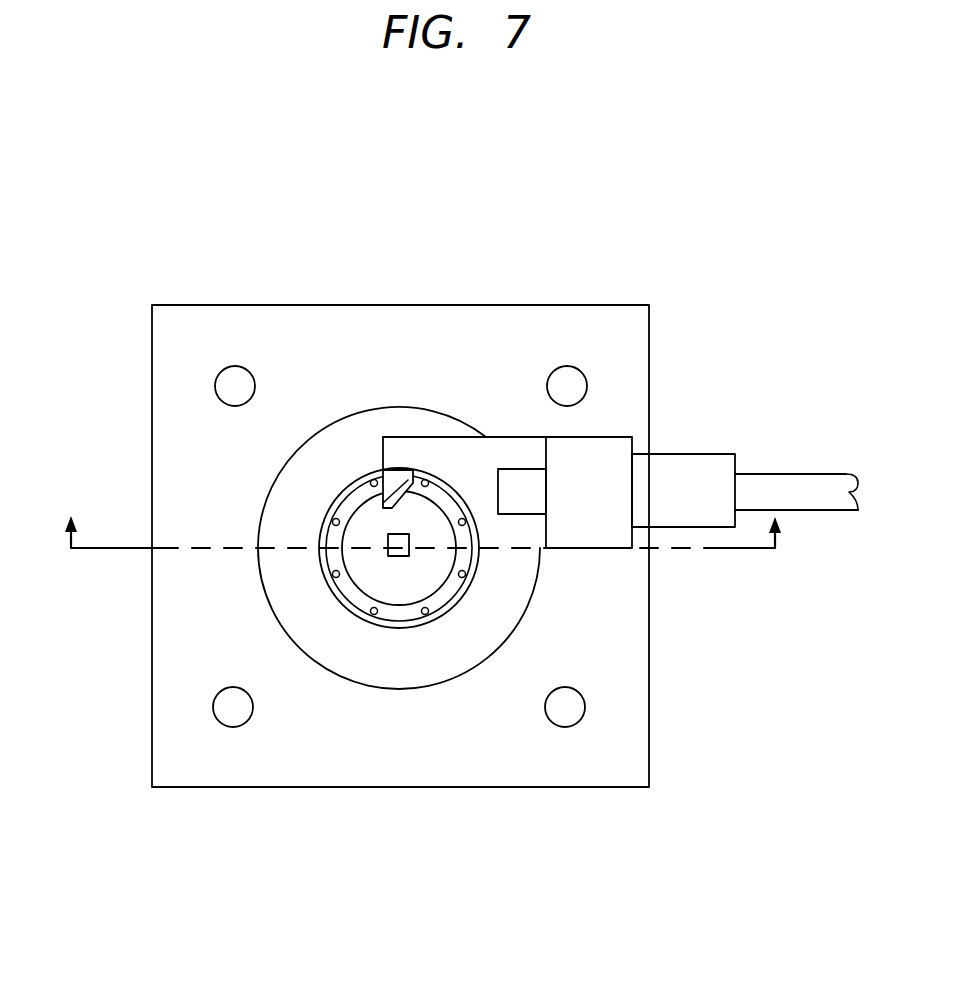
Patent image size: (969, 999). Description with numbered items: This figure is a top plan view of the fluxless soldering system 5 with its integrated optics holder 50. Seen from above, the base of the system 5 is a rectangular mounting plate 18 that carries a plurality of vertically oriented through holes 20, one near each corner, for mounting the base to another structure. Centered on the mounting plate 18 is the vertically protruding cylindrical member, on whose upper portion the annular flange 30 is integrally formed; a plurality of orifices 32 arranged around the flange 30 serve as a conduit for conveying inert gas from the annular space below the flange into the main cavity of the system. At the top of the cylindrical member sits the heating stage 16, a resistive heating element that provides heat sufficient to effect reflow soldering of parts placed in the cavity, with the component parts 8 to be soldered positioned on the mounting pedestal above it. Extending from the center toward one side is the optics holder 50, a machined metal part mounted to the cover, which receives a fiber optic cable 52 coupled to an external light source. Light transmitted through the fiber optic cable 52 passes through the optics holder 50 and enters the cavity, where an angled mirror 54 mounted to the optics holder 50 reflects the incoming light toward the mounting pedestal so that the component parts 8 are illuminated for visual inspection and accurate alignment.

The system 5 is at (478, 210).
The component parts 8 is at (424, 530).
The heating stage 16 is at (399, 556).
The mounting plate 18 is at (187, 755).
The through holes 20 is at (565, 707).
The annular flange 30 is at (360, 490).
The orifices 32 is at (336, 515).
The optics holder 50 is at (606, 465).
The fiber optic cable 52 is at (699, 475).
The mirror 54 is at (394, 480).